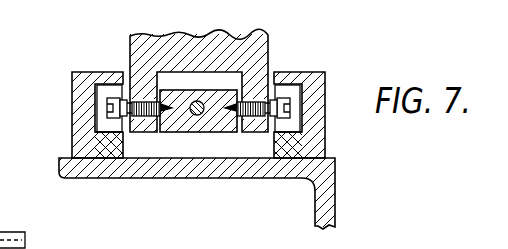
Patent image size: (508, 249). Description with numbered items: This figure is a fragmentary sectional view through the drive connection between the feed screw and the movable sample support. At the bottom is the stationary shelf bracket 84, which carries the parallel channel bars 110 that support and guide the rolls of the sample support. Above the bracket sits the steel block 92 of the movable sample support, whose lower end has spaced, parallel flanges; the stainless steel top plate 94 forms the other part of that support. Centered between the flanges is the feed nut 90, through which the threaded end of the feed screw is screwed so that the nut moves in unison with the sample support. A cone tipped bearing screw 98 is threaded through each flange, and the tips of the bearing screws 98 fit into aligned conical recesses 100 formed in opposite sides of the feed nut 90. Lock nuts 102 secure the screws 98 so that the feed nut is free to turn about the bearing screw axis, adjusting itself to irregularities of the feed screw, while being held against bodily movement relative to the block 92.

The shelf bracket 84 is at (137, 172).
The feed nut 90 is at (200, 132).
The steel block 92 is at (268, 45).
The stainless steel top plate 94 is at (27, 238).
The cone tipped bearing screw 98 is at (142, 100).
The conical recess 100 is at (170, 112).
The lock nut 102 is at (110, 114).
The channel bar 110 is at (82, 104).